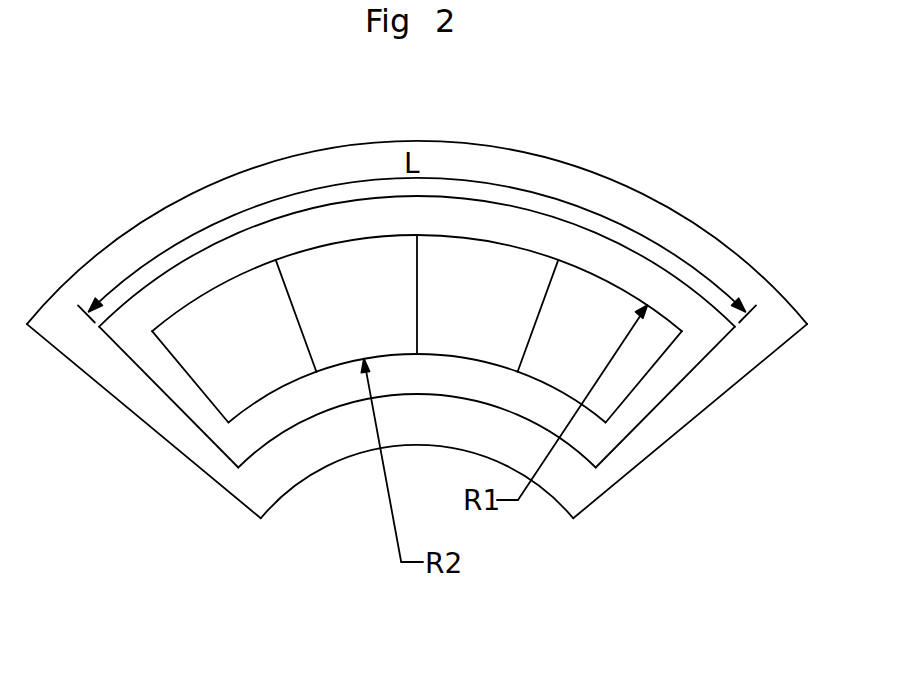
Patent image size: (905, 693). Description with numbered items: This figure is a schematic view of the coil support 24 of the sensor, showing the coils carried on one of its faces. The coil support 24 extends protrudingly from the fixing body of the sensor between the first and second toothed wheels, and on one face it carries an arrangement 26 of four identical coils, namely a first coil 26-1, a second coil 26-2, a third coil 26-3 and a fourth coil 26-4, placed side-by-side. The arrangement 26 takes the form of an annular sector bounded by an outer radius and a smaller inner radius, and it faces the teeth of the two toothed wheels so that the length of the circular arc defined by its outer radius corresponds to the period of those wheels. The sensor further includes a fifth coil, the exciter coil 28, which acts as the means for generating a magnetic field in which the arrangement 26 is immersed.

The coil support 24 is at (546, 494).
The arrangement of coils 26 is at (403, 284).
The first coil 26-1 is at (222, 338).
The second coil 26-2 is at (360, 280).
The third coil 26-3 is at (472, 280).
The fourth coil 26-4 is at (610, 338).
The exciter coil 28 is at (261, 518).